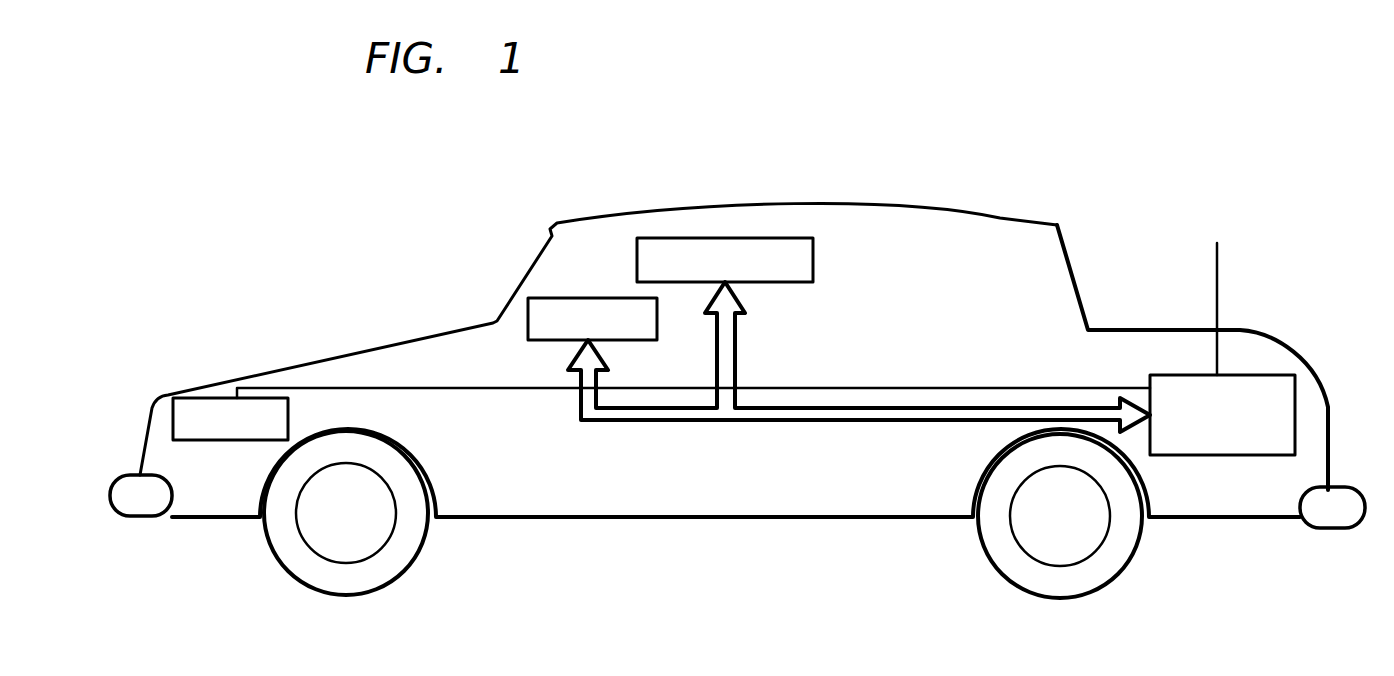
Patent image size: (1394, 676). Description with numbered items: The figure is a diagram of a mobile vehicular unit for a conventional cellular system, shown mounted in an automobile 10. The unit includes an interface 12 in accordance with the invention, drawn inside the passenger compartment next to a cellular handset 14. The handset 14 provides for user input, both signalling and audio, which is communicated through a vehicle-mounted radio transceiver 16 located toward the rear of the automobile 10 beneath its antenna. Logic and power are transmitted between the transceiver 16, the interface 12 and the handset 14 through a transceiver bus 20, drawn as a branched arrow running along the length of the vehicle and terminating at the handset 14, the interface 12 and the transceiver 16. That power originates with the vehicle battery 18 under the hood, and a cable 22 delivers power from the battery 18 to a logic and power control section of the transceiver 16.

The automobile 10 is at (1068, 202).
The interface 12 is at (717, 238).
The cellular handset 14 is at (565, 298).
The radio transceiver 16 is at (1253, 375).
The vehicle battery 18 is at (198, 398).
The transceiver bus 20 is at (752, 422).
The cable 22 is at (358, 388).